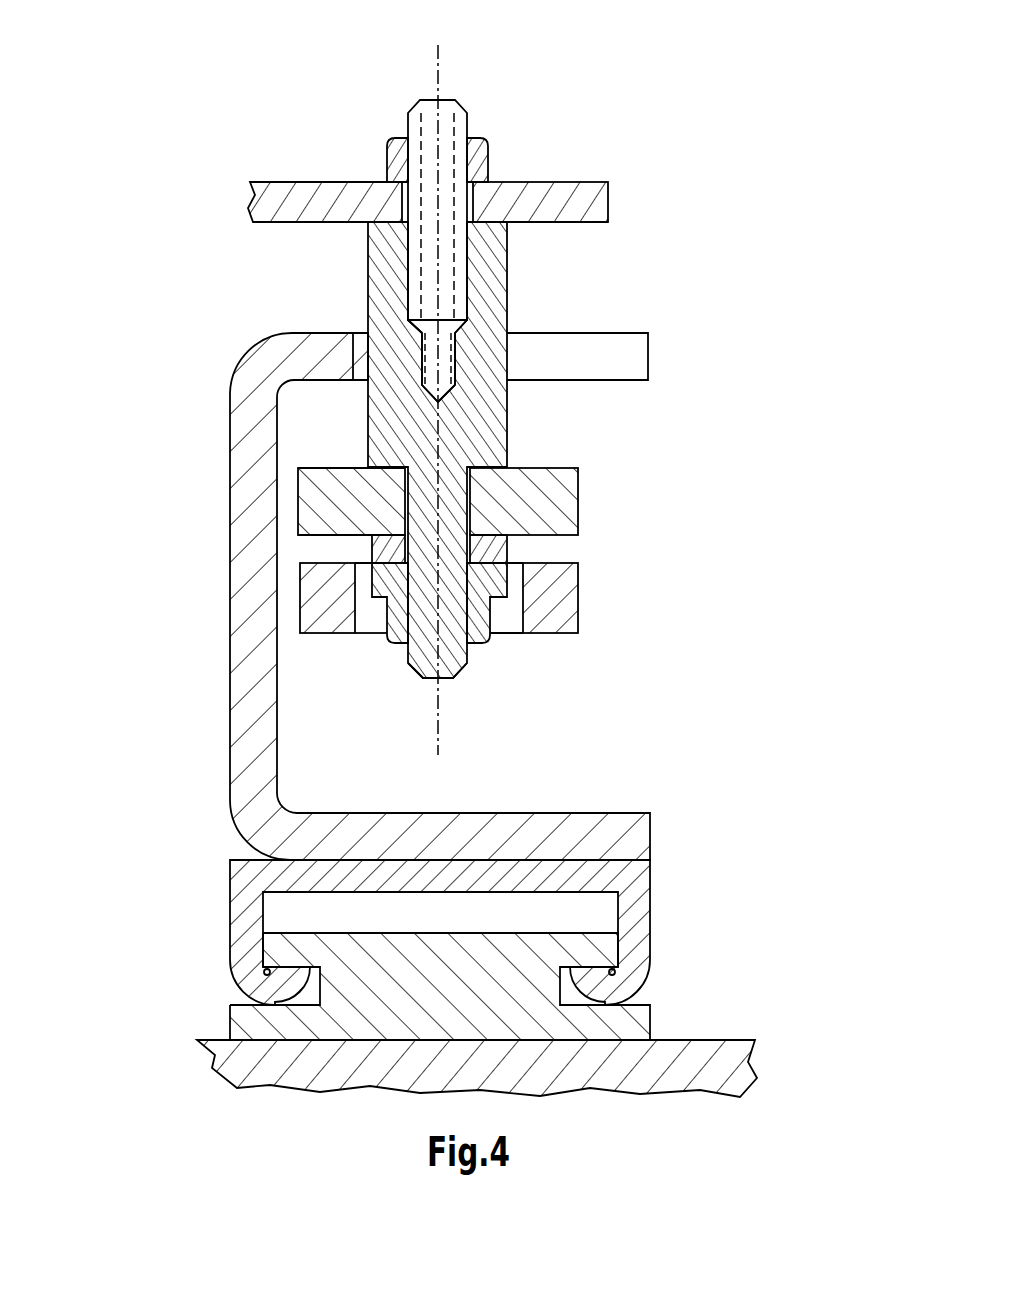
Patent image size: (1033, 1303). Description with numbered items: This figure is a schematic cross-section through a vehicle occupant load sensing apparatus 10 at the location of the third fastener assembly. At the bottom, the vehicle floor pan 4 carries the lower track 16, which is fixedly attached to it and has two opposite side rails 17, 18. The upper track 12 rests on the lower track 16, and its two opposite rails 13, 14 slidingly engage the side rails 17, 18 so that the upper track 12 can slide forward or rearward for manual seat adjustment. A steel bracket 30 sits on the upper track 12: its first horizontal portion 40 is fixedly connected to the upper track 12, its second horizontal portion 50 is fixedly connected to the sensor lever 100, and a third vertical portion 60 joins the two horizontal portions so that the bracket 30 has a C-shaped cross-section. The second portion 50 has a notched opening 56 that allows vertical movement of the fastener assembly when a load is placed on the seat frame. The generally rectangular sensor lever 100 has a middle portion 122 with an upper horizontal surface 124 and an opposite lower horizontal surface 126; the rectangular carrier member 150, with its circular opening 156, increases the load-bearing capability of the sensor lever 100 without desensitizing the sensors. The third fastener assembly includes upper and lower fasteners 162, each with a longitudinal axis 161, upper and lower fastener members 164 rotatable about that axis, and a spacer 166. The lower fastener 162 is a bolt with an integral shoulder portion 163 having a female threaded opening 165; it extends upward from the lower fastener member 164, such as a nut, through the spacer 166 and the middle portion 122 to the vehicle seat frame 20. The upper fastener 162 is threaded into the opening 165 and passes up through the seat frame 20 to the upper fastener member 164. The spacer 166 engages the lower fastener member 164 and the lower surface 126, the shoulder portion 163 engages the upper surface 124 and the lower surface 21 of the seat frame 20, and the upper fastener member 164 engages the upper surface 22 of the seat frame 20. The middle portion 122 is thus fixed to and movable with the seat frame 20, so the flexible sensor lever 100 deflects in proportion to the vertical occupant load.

The vehicle floor pan 4 is at (203, 1037).
The vehicle occupant load sensing apparatus 10 is at (606, 82).
The upper track 12 is at (660, 900).
The rail 13 is at (287, 990).
The rail 14 is at (590, 983).
The lower track 16 is at (657, 1023).
The side rail 17 is at (283, 953).
The side rail 18 is at (598, 952).
The vehicle seat frame 20 is at (285, 181).
The lower surface of the vehicle seat frame 21 is at (592, 221).
The upper surface of the vehicle seat frame 22 is at (594, 182).
The bracket 30 is at (252, 351).
The first horizontal portion 40 is at (630, 842).
The second horizontal portion 50 is at (331, 365).
The notched opening 56 is at (627, 360).
The third vertical portion 60 is at (258, 617).
The sensor lever 100 is at (579, 500).
The middle portion 122 is at (578, 465).
The upper horizontal surface 124 is at (320, 468).
The lower horizontal surface 126 is at (320, 538).
The carrier member 150 is at (585, 600).
The circular opening 156 is at (372, 630).
The longitudinal axis 161 is at (440, 737).
The fastener 162 is at (464, 114).
The integral shoulder portion 163 is at (497, 274).
The fastener member 164 is at (489, 146).
The female threaded opening 165 is at (445, 368).
The spacer 166 is at (508, 548).